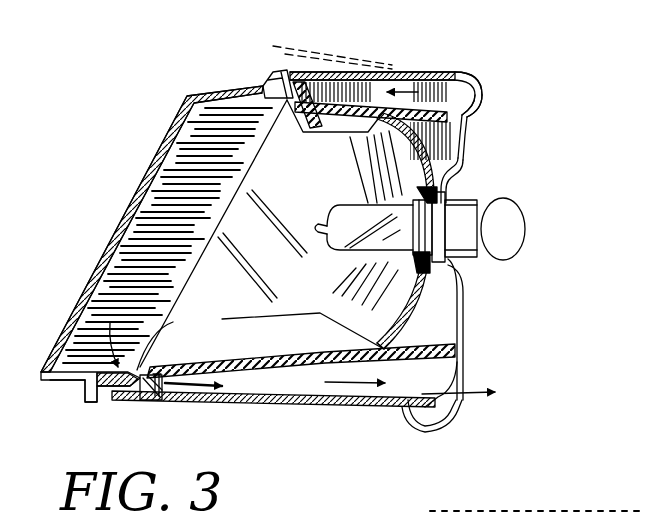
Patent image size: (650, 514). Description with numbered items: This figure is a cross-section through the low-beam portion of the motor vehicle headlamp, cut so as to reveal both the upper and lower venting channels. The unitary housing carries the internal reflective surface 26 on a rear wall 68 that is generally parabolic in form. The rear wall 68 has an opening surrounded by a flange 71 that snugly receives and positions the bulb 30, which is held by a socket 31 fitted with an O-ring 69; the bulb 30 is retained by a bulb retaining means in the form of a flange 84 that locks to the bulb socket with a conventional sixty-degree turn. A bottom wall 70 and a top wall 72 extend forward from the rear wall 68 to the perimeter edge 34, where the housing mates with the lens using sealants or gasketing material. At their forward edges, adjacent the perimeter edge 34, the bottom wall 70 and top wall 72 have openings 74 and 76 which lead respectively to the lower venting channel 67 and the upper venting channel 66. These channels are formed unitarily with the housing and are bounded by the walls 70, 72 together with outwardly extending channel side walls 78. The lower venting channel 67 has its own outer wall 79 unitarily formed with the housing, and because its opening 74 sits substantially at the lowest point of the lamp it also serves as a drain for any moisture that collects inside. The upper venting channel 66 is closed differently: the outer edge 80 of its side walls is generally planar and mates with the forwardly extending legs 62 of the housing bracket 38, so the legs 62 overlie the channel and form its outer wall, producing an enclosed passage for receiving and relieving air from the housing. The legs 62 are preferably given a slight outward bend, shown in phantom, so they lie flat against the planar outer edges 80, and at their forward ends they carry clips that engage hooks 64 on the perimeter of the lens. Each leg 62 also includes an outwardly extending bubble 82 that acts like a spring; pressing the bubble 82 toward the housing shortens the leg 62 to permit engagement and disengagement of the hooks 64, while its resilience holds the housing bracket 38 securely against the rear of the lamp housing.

The reflective surface 26 is at (347, 317).
The bulb 30 is at (342, 217).
The socket 31 is at (485, 257).
The perimeter edge 34 is at (125, 400).
The housing bracket 38 is at (465, 318).
The forwardly extending legs 62 is at (322, 38).
The hooks 64 is at (273, 72).
The upper venting channel 66 is at (392, 77).
The lower venting channel 67 is at (283, 383).
The rear wall 68 is at (423, 297).
The O-ring 69 is at (413, 268).
The bottom wall 70 is at (280, 354).
The flange 71 is at (410, 193).
The top wall 72 is at (367, 123).
The opening 74 is at (147, 370).
The opening 76 is at (382, 70).
The channel side walls 78 is at (485, 85).
The outer wall 79 is at (330, 400).
The outer edge 80 is at (435, 70).
The bubbles 82 is at (458, 98).
The flange 84 is at (458, 183).